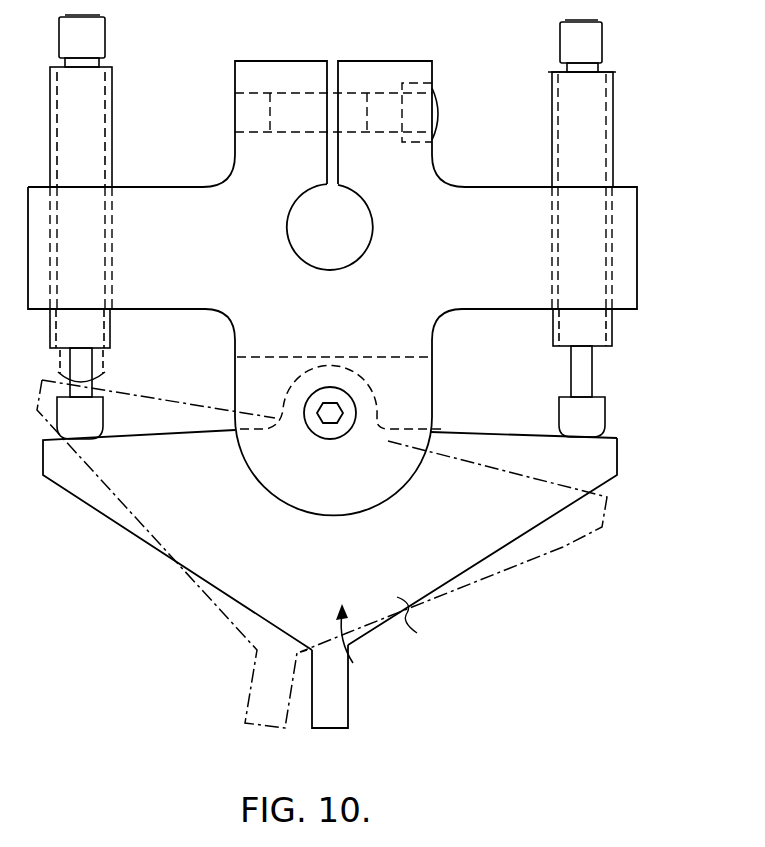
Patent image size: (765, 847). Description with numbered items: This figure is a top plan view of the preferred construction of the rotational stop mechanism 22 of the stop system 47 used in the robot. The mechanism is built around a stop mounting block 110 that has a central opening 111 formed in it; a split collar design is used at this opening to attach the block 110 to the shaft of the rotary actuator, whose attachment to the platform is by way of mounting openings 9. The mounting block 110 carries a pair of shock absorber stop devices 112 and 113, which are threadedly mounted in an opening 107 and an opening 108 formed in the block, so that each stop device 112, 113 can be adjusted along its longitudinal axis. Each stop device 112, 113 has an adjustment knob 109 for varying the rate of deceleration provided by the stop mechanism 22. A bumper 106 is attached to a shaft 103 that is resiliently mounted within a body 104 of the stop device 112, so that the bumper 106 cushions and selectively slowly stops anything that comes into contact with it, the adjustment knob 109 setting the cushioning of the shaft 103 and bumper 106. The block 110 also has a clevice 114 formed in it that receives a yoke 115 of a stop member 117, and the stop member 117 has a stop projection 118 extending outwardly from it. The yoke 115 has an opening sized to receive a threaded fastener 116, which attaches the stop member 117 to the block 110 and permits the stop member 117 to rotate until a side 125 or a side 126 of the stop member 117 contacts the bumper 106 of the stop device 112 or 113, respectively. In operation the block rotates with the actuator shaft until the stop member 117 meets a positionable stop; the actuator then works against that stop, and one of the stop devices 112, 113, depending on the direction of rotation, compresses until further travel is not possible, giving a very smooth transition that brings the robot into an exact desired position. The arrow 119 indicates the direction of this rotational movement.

The stop system 47 is at (225, 52).
The shock absorber stop device 113 is at (80, 119).
The opening 108 is at (112, 187).
The stop mounting block 110 is at (433, 208).
The central opening 111 is at (330, 256).
The opening 107 is at (615, 187).
The shock absorber stop device 112 is at (613, 129).
The body 104 is at (613, 163).
The adjustment knob 109 is at (603, 50).
The shaft 103 is at (593, 381).
The bumper 106 is at (615, 417).
The side 126 is at (162, 406).
The clevice 114 is at (399, 414).
The threaded fastener 116 is at (380, 376).
The yoke 115 is at (375, 453).
The side 125 is at (540, 404).
The stop member 117 is at (330, 540).
The stop projection 118 is at (333, 718).
The rotational stop mechanism 22 is at (567, 557).
The mounting openings 9 is at (414, 617).
The direction arrow 119 is at (373, 641).